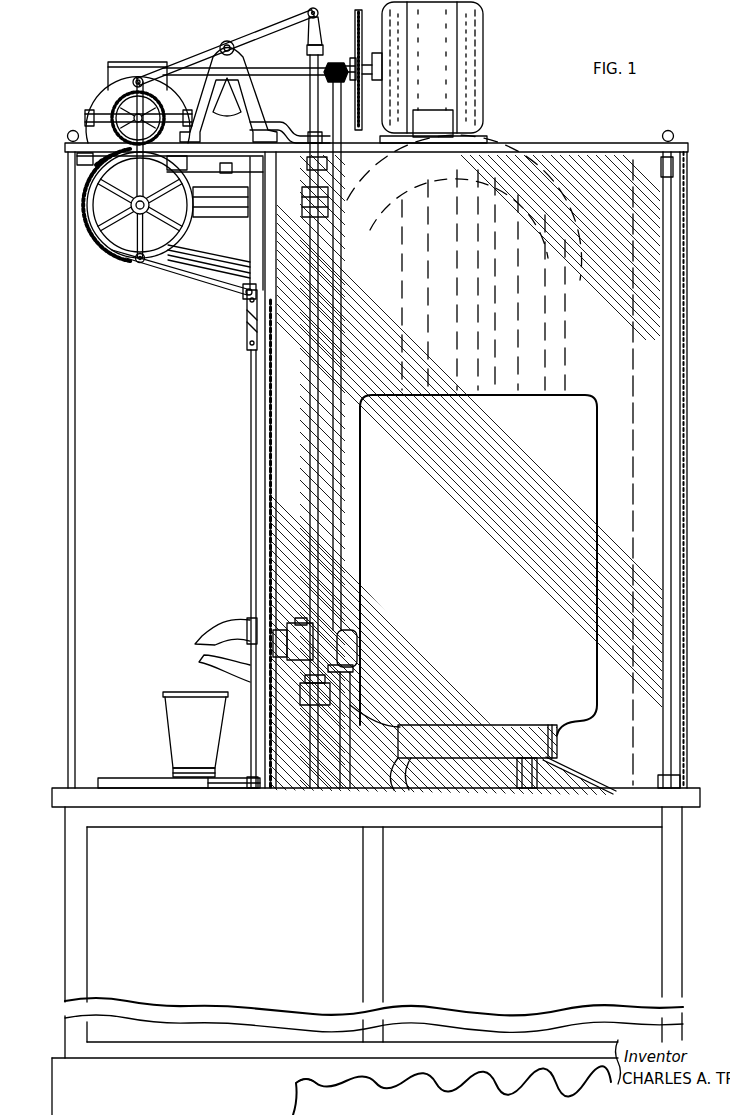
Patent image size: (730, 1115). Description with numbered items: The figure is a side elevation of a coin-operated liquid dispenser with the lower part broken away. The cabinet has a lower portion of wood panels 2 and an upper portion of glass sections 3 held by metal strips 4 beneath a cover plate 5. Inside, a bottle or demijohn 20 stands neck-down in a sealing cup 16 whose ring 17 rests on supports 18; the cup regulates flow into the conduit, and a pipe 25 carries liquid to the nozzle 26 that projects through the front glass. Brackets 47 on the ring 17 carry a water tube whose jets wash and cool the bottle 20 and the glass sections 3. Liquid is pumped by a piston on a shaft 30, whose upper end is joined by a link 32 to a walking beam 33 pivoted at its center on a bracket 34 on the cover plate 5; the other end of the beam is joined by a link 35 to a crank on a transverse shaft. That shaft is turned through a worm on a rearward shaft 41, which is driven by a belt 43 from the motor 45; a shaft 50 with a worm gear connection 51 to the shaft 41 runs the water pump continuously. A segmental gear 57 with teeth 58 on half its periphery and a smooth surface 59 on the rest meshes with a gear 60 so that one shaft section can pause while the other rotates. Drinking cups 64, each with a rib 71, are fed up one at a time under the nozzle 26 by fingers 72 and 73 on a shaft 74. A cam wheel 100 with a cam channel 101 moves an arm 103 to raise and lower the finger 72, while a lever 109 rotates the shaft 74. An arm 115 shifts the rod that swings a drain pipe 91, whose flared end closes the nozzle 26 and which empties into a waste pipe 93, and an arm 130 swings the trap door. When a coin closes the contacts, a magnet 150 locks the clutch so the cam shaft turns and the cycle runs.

The panels of wood 2 is at (376, 951).
The sections of glass 3 is at (650, 390).
The metal strips 4 is at (265, 493).
The cover plate 5 is at (603, 152).
The sealing cup 16 is at (537, 780).
The ring 17 is at (558, 738).
The supports 18 is at (403, 793).
The bottle or demijohn 20 is at (597, 651).
The pipe 25 is at (352, 700).
The nozzle 26 is at (222, 623).
The shaft 30 is at (311, 380).
The link 32 is at (317, 15).
The walking beam 33 is at (254, 33).
The bracket 34 is at (208, 107).
The link 35 is at (135, 79).
The shaft 41 is at (267, 70).
The belt or other driving means 43 is at (362, 34).
The motor 45 is at (474, 60).
The brackets 47 is at (596, 776).
The shaft 50 is at (341, 493).
The worm gear connection 51 is at (337, 62).
The gear 57 is at (122, 260).
The teeth 58 is at (88, 228).
The smooth surface 59 is at (188, 184).
The gear 60 is at (117, 107).
The cups 64 is at (178, 716).
The rib 71 is at (165, 693).
The finger 72 is at (223, 780).
The finger 73 is at (227, 789).
The shaft 74 is at (253, 535).
The drain pipe 91 is at (200, 660).
The waste pipe 93 is at (307, 1097).
The cam wheel 100 is at (108, 203).
The cam channel 101 is at (97, 173).
The arm 103 is at (197, 282).
The lever 109 is at (200, 172).
The arm 115 is at (205, 258).
The arm 130 is at (203, 244).
The magnet 150 is at (248, 197).